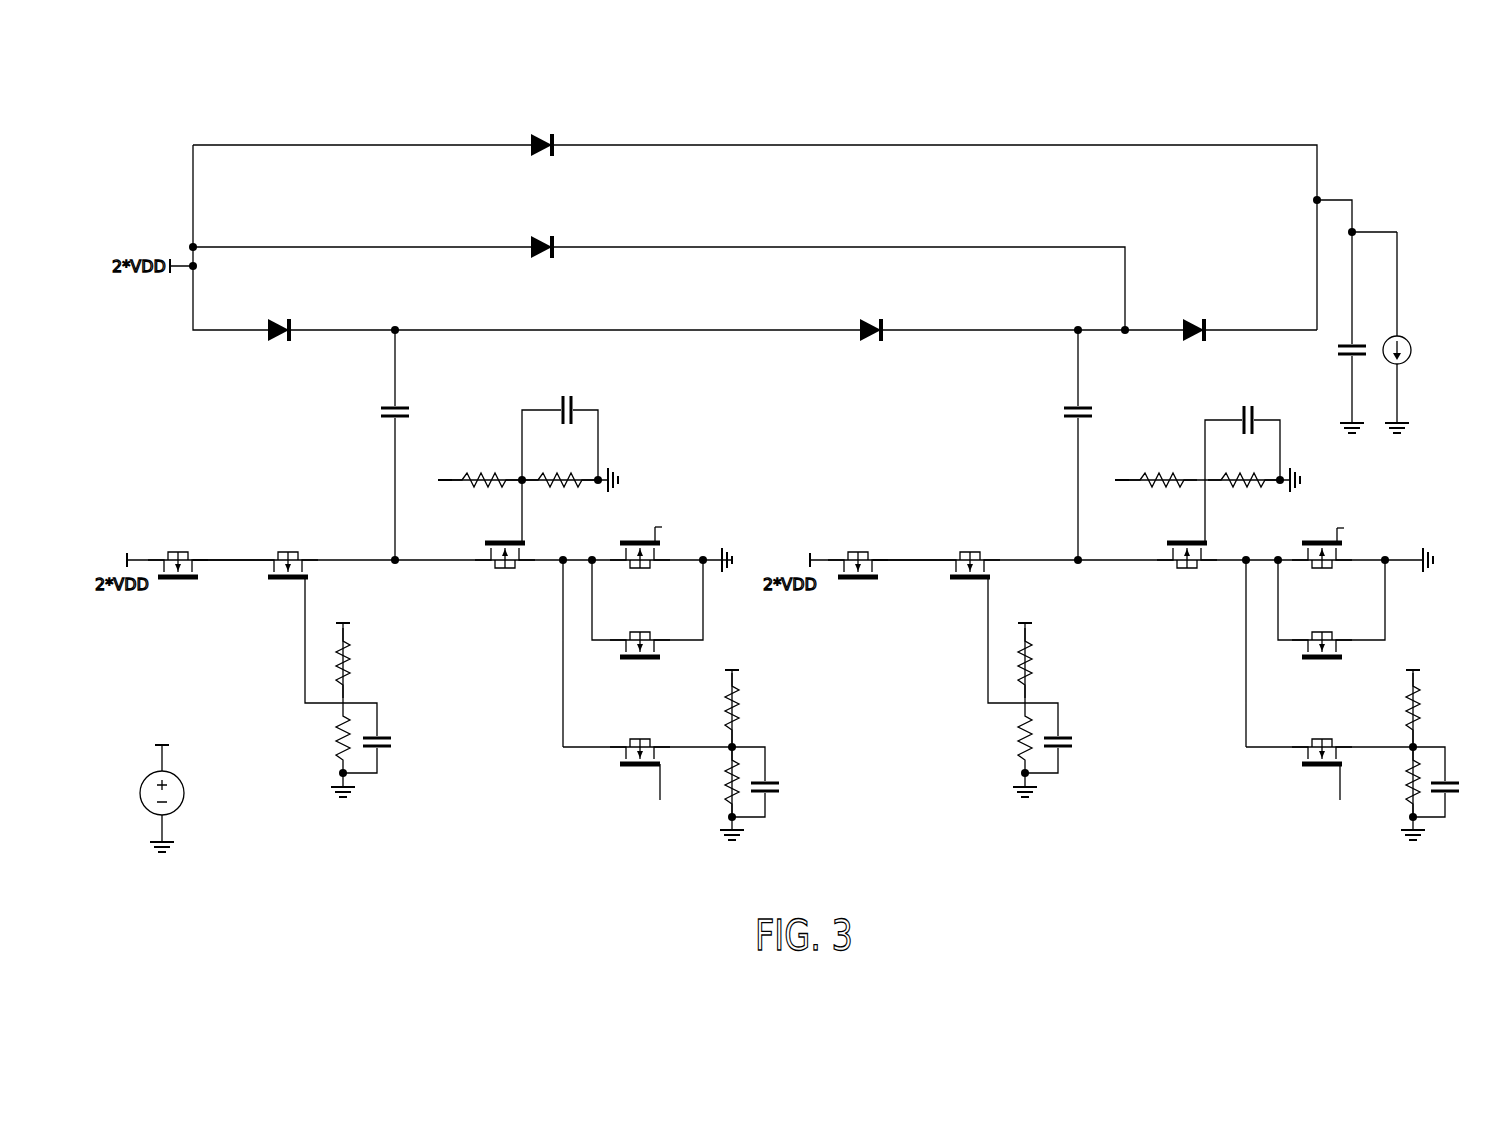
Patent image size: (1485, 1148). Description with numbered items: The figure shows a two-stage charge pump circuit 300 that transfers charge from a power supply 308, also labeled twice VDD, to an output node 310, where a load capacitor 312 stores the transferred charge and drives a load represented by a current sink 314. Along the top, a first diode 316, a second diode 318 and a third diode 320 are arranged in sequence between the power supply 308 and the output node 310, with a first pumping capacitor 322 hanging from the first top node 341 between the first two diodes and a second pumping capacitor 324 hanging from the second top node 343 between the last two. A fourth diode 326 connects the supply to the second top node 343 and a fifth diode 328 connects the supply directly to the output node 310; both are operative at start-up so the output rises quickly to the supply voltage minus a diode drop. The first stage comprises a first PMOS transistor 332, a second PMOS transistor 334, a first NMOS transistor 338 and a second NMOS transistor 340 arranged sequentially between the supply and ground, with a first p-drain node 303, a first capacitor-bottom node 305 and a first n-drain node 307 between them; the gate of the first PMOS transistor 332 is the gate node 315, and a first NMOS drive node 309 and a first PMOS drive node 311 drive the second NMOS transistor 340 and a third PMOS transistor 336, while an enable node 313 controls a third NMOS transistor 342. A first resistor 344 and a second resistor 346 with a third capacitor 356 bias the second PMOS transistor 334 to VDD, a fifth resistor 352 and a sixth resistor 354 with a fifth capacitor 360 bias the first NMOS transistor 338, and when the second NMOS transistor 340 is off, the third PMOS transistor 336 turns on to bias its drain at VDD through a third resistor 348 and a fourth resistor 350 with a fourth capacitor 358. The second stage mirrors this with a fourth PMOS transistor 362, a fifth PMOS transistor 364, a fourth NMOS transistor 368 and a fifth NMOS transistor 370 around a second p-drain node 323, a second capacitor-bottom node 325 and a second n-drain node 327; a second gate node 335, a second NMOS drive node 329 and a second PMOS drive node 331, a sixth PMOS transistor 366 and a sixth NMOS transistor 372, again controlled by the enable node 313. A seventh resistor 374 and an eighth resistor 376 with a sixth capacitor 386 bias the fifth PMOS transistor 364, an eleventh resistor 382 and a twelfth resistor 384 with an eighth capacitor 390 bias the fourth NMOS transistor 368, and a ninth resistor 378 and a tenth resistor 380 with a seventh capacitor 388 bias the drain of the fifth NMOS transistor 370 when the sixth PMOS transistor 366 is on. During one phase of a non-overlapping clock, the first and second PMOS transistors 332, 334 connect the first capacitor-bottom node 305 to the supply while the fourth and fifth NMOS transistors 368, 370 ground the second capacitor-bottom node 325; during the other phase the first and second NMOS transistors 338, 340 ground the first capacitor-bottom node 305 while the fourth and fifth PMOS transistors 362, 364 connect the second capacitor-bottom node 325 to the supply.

The charge pump circuit 300 is at (195, 98).
The pdrain1 node 303 is at (243, 565).
The cap1_bot node 305 is at (393, 556).
The ndrain1 node 307 is at (563, 565).
The power supply 308 is at (184, 797).
The nmos_dr_stg1 node 309 is at (662, 527).
The output node Pump_out 310 is at (1392, 213).
The pmos_dr_stg1 node 311 is at (662, 800).
The capacitor CL 312 is at (1350, 365).
The en_cp_b node 313 is at (655, 662).
The current sink Iload 314 is at (1401, 366).
The D node 315 is at (197, 582).
The diode D1 316 is at (270, 340).
The diode D2 318 is at (858, 320).
The diode D3 320 is at (1203, 322).
The capacitor C1 322 is at (400, 410).
The pdrain2 node 323 is at (915, 565).
The capacitor C2 324 is at (1083, 410).
The cap2_bot node 325 is at (1076, 556).
The diode D4 326 is at (532, 243).
The ndrain2 node 327 is at (1244, 565).
The diode D5 328 is at (530, 160).
The nmos_dr_stg2 node 329 is at (1344, 528).
The pmos_dr_stg2 node 331 is at (1342, 800).
The transistor MP1 332 is at (178, 545).
The transistor MP2 334 is at (288, 545).
The D_stg2 node 335 is at (877, 582).
The transistor MP3 336 is at (642, 738).
The transistor MN1 338 is at (508, 578).
The transistor MN2 340 is at (650, 572).
The cap1_top node 341 is at (392, 334).
The transistor MN3 342 is at (645, 652).
The cap2_top node 343 is at (1075, 334).
The resistor R1 344 is at (350, 655).
The resistor R2 346 is at (340, 752).
The resistor R3 348 is at (742, 700).
The resistor R4 350 is at (722, 805).
The resistor R5 352 is at (478, 474).
The resistor R6 354 is at (570, 475).
The capacitor C3 356 is at (380, 738).
The capacitor C4 358 is at (775, 782).
The capacitor C5 360 is at (575, 405).
The transistor MP4 362 is at (858, 545).
The transistor MP5 364 is at (970, 545).
The transistor MP6 366 is at (1324, 738).
The transistor MN4 368 is at (1192, 578).
The transistor MN5 370 is at (1332, 572).
The transistor MN6 372 is at (1332, 652).
The resistor R7 374 is at (1032, 655).
The resistor R8 376 is at (1022, 752).
The resistor R9 378 is at (1405, 704).
The resistor R10 380 is at (1405, 805).
The resistor R11 382 is at (1160, 474).
The resistor R12 384 is at (1250, 484).
The capacitor C6 386 is at (1062, 738).
The capacitor C7 388 is at (1450, 805).
The capacitor C8 390 is at (1244, 415).